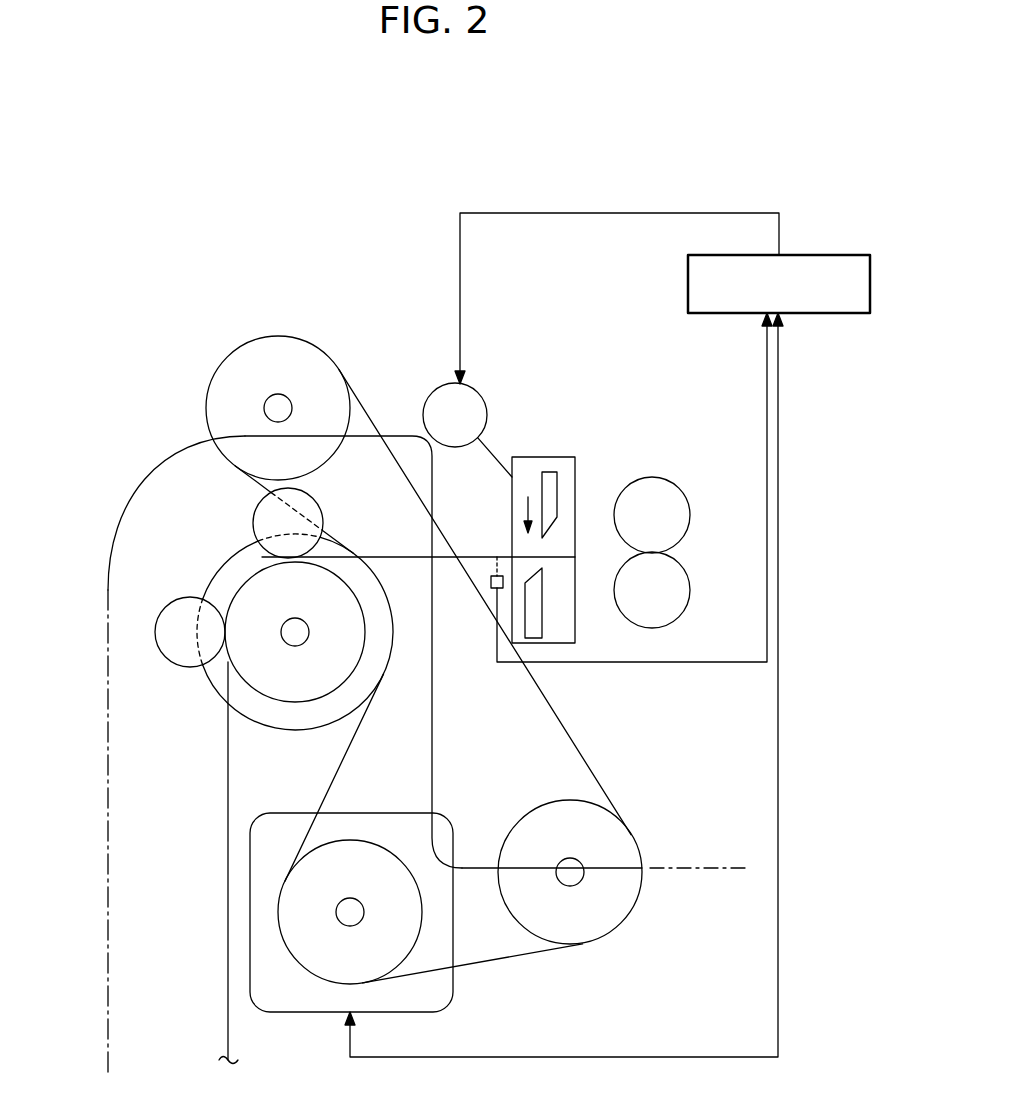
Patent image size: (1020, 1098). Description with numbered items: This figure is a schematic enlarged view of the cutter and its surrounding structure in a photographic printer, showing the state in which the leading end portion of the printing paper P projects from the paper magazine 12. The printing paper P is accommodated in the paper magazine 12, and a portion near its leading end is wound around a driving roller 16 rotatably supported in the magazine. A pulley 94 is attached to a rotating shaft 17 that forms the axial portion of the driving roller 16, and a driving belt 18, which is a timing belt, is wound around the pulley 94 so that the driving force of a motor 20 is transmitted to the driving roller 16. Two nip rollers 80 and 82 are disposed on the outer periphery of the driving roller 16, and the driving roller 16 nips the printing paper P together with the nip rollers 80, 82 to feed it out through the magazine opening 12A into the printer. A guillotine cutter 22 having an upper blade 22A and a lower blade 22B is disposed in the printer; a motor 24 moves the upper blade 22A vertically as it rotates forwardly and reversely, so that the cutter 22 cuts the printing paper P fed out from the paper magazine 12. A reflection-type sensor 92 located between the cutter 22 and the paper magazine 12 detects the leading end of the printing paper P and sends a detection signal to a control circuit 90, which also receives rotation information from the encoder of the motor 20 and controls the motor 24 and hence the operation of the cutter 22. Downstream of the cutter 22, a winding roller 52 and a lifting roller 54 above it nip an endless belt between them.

The paper magazine 12 is at (108, 940).
The magazine opening 12A is at (428, 548).
The driving roller 16 is at (273, 702).
The rotating shaft 17 is at (282, 643).
The driving belt 18 is at (358, 412).
The motor 20 is at (283, 1013).
The guillotine cutter 22 is at (527, 453).
The upper blade 22A is at (553, 472).
The lower blade 22B is at (545, 628).
The motor 24 is at (450, 378).
The winding roller 52 is at (691, 612).
The lifting roller 54 is at (691, 512).
The nip roller 80 is at (170, 668).
The nip roller 82 is at (253, 520).
The control circuit 90 is at (813, 255).
The reflection-type sensor 92 is at (489, 585).
The pulley 94 is at (213, 576).
The printing paper P is at (228, 842).